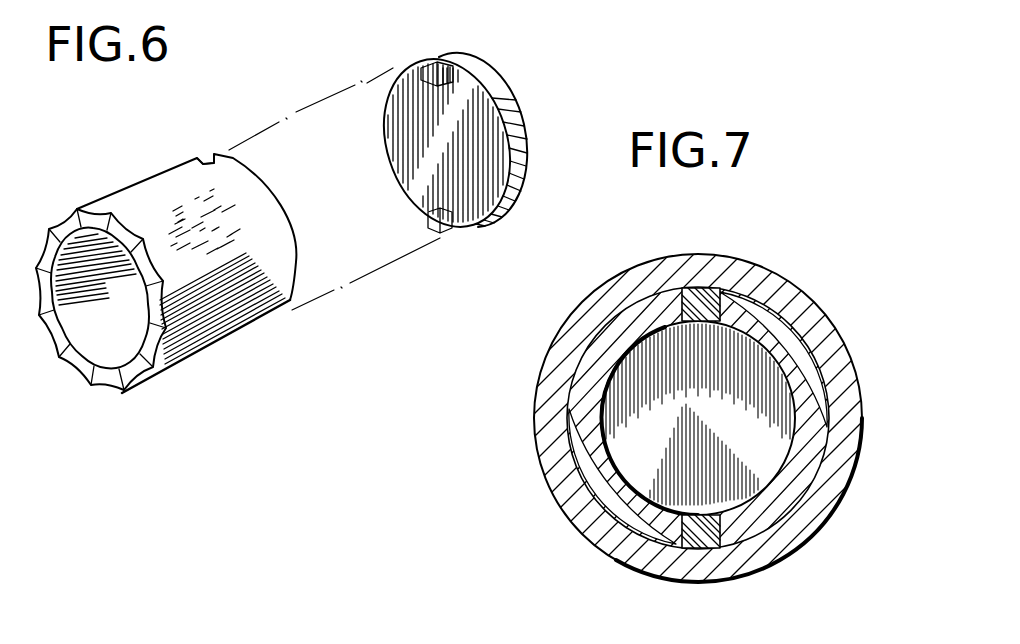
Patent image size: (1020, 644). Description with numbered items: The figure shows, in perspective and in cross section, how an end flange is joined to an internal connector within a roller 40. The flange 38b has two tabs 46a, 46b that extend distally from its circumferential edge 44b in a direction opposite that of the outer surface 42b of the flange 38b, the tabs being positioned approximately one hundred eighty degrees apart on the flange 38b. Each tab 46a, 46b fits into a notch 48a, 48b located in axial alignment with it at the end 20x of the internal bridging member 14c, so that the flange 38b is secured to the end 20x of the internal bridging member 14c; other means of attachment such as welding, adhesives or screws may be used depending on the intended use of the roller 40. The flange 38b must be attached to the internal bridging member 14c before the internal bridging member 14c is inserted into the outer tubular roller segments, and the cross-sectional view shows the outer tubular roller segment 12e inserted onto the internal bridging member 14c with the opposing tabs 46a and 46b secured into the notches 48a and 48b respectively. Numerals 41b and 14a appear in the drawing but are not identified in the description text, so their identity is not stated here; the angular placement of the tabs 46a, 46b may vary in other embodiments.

In FIG. 6, the internal bridging member 14c is at (189, 330).
In FIG. 6, the end of internal bridging member 20x is at (265, 322).
In FIG. 6, the notch 48a is at (210, 160).
In FIG. 7, the notch 48a is at (682, 288).
In FIG. 7, the notch 48b is at (681, 543).
In FIG. 6, the flange 38b is at (493, 66).
In FIG. 6, the outer surface of flange 42b is at (527, 132).
In FIG. 6, the circumferential edge 44b is at (503, 103).
In FIG. 6, the end wall 41b is at (478, 198).
In FIG. 6, the tab 46a is at (422, 70).
In FIG. 7, the tab 46a is at (703, 288).
In FIG. 6, the tab 46b is at (428, 224).
In FIG. 7, the tab 46b is at (722, 547).
In FIG. 7, the roller 40 is at (799, 271).
In FIG. 7, the outer tubular roller segment 12e is at (811, 318).
In FIG. 7, the inner tube 14a is at (811, 382).